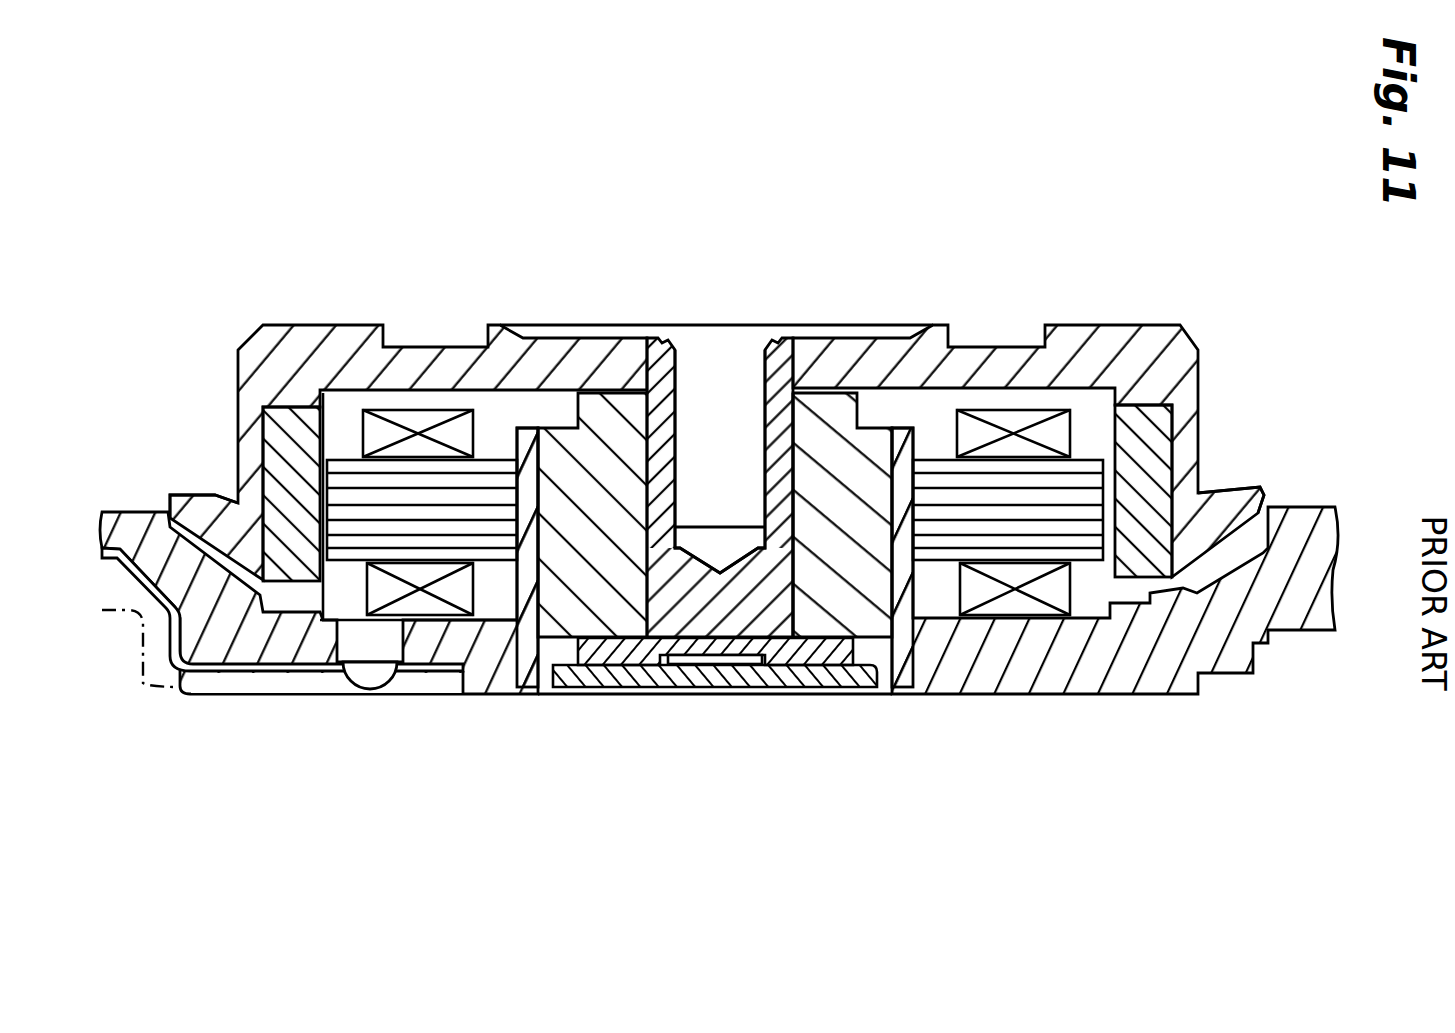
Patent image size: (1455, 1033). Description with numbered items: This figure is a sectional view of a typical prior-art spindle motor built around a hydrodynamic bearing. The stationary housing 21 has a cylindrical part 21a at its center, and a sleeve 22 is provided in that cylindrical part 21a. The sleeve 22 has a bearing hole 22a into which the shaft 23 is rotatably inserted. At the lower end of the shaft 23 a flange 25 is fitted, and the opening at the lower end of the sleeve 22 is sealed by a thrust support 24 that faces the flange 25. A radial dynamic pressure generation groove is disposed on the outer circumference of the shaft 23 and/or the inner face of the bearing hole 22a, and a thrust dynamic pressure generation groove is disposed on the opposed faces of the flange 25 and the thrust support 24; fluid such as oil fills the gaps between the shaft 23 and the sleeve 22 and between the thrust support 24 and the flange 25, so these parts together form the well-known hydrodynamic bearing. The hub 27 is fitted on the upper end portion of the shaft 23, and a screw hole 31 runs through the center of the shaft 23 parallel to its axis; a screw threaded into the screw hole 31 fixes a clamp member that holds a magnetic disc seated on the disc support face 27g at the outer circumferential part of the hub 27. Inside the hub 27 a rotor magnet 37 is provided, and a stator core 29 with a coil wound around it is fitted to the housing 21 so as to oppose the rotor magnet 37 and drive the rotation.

The housing 21 is at (1233, 603).
The cylindrical part 21a is at (522, 598).
The sleeve 22 is at (568, 607).
The bearing hole 22a is at (787, 583).
The shaft 23 is at (673, 665).
The thrust support 24 is at (742, 678).
The flange 25 is at (625, 660).
The hub 27 is at (852, 363).
The disc support face 27g is at (187, 492).
The stator core 29 is at (415, 420).
The screw hole 31 is at (718, 382).
The rotor magnet 37 is at (1150, 540).